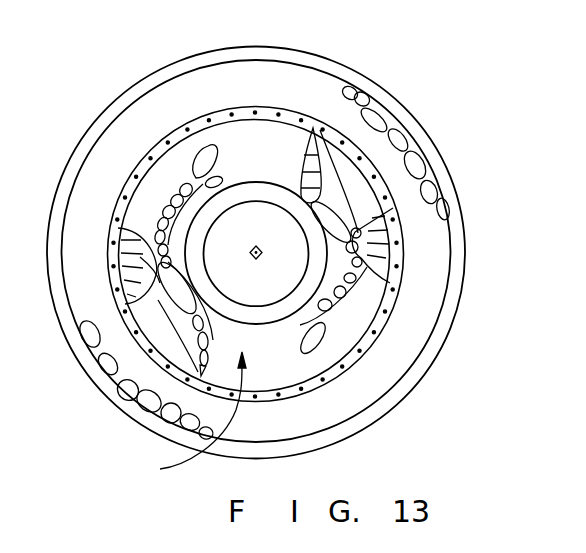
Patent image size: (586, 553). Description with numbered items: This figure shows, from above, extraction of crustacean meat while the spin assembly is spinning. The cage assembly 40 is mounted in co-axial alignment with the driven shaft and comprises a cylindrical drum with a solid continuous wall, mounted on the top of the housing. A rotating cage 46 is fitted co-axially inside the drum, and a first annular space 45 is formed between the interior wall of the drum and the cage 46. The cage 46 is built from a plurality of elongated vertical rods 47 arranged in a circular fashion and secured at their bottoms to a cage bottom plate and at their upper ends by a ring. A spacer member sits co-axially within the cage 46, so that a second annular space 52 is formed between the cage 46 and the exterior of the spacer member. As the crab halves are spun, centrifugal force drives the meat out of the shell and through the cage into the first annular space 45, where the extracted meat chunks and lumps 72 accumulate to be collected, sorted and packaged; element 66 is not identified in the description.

The cage assembly 40 is at (466, 219).
The first annular space 45 is at (292, 77).
The rotating cage 46 is at (402, 265).
The elongated vertical rods 47 is at (145, 159).
The second annular space 52 is at (183, 418).
The fan-shaped blade 66 is at (380, 267).
The extracted meat chunks and lumps 72 is at (370, 107).